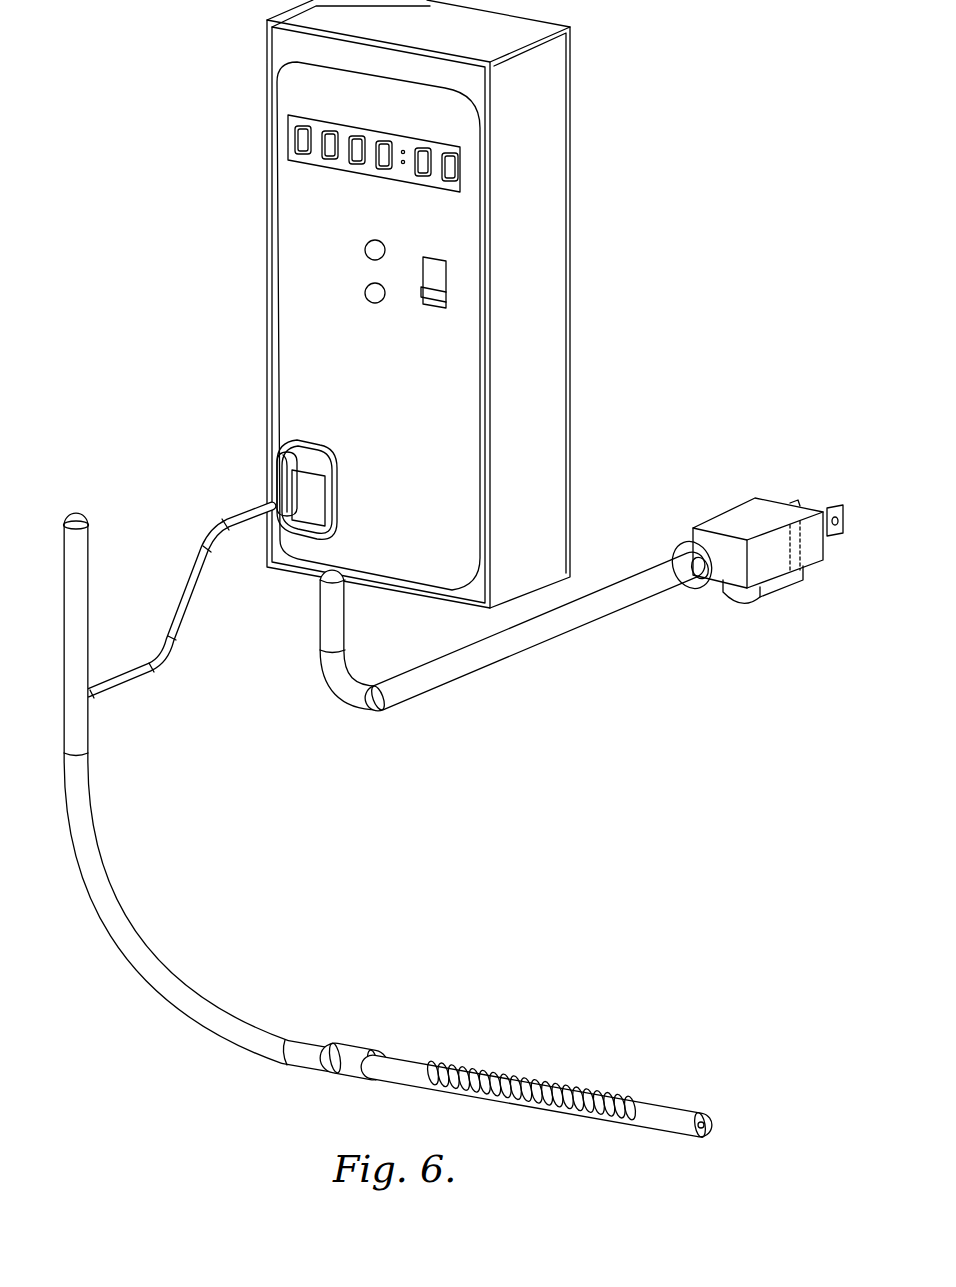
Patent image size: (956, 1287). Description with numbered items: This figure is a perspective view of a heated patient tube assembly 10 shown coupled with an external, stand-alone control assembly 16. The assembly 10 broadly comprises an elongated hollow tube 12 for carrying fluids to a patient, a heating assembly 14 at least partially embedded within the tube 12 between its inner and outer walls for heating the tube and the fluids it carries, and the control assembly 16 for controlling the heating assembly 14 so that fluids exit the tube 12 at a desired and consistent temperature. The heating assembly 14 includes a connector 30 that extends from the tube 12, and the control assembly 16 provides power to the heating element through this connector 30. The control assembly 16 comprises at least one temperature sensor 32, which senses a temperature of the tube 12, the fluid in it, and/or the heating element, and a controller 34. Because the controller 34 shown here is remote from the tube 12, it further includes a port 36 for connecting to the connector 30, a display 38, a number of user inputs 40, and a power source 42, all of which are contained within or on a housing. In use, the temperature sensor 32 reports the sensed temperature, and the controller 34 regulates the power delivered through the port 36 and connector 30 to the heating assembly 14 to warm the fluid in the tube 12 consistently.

The heated patient tube assembly 10 is at (140, 438).
The elongated hollow tube 12 is at (148, 948).
The heating assembly 14 is at (585, 1087).
The control assembly 16 is at (592, 343).
The connector 30 is at (298, 460).
The temperature sensor 32 is at (362, 1052).
The controller 34 is at (292, 313).
The port 36 is at (342, 488).
The display 38 is at (377, 137).
The user inputs 40 is at (358, 266).
The power source 42 is at (565, 620).